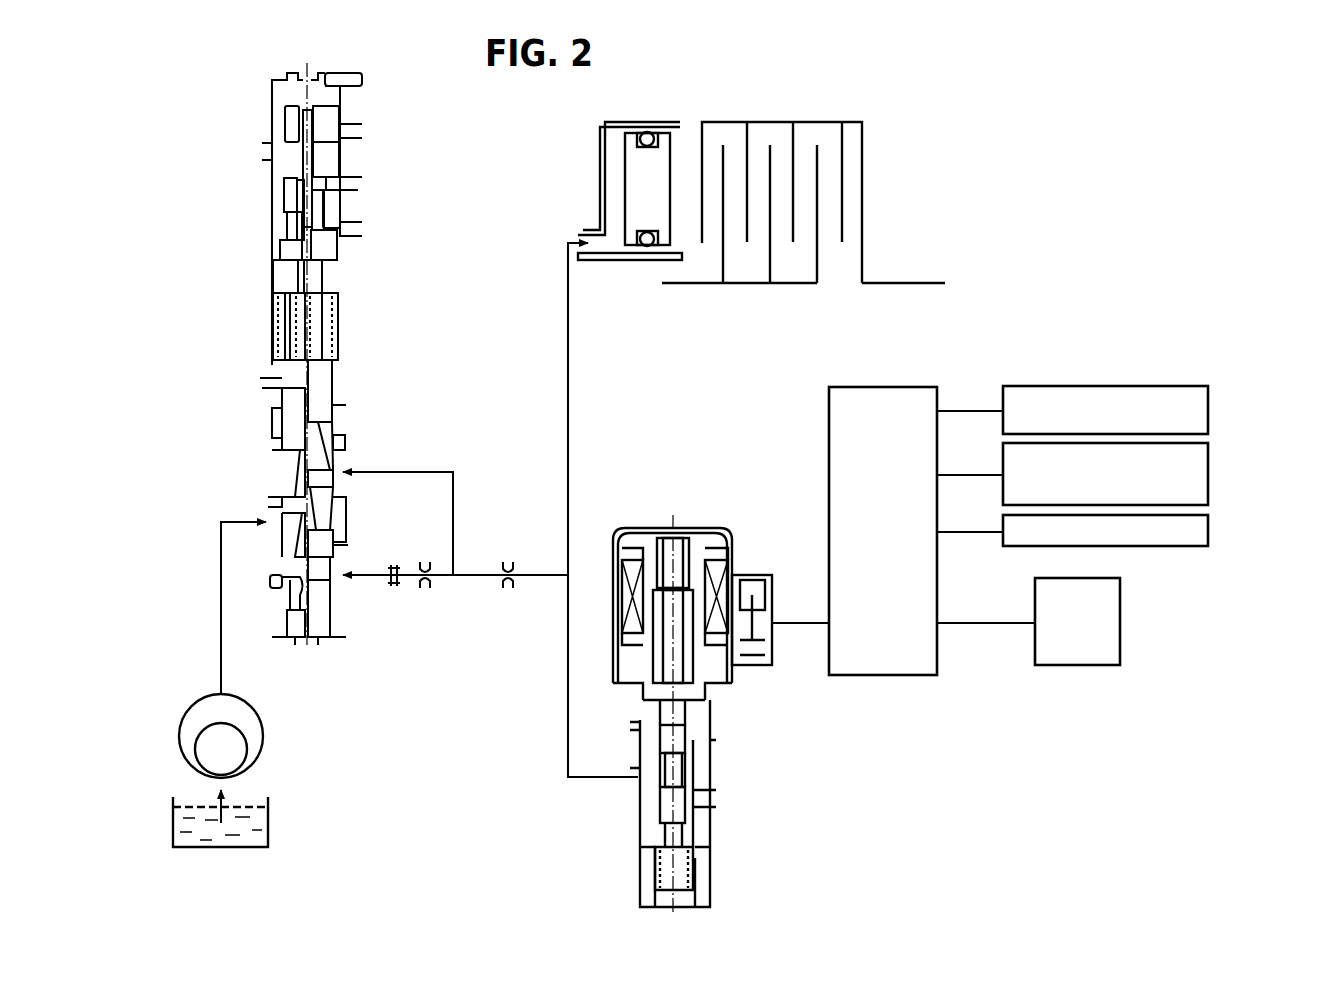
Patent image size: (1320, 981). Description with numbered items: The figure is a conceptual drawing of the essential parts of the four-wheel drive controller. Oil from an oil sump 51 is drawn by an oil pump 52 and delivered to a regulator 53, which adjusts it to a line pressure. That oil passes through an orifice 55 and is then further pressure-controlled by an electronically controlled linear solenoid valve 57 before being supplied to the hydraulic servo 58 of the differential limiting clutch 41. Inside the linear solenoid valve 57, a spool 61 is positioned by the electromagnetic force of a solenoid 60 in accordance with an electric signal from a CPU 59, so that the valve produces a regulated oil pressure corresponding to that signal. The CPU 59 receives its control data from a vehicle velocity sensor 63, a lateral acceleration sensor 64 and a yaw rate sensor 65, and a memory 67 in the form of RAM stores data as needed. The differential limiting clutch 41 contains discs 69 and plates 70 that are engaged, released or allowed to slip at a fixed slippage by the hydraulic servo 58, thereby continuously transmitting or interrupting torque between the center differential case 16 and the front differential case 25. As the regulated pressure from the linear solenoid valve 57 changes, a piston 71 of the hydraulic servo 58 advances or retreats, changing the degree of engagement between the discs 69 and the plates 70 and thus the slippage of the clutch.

The center differential case 16 is at (927, 282).
The front differential case 25 is at (697, 285).
The differential limiting clutch 41 is at (829, 111).
The oil sump 51 is at (268, 827).
The oil pump 52 is at (263, 742).
The regulator 53 is at (262, 279).
The orifice 55 is at (507, 583).
The linear solenoid valve 57 is at (725, 731).
The hydraulic servo 58 is at (590, 187).
The CPU 59 is at (905, 387).
The solenoid 60 is at (720, 568).
The spool 61 is at (685, 813).
The vehicle velocity sensor 63 is at (1208, 413).
The lateral acceleration sensor 64 is at (1208, 477).
The yaw rate sensor 65 is at (1208, 530).
The memory 67 is at (1120, 632).
The discs 69 is at (770, 262).
The plates 70 is at (842, 185).
The piston 71 is at (660, 167).